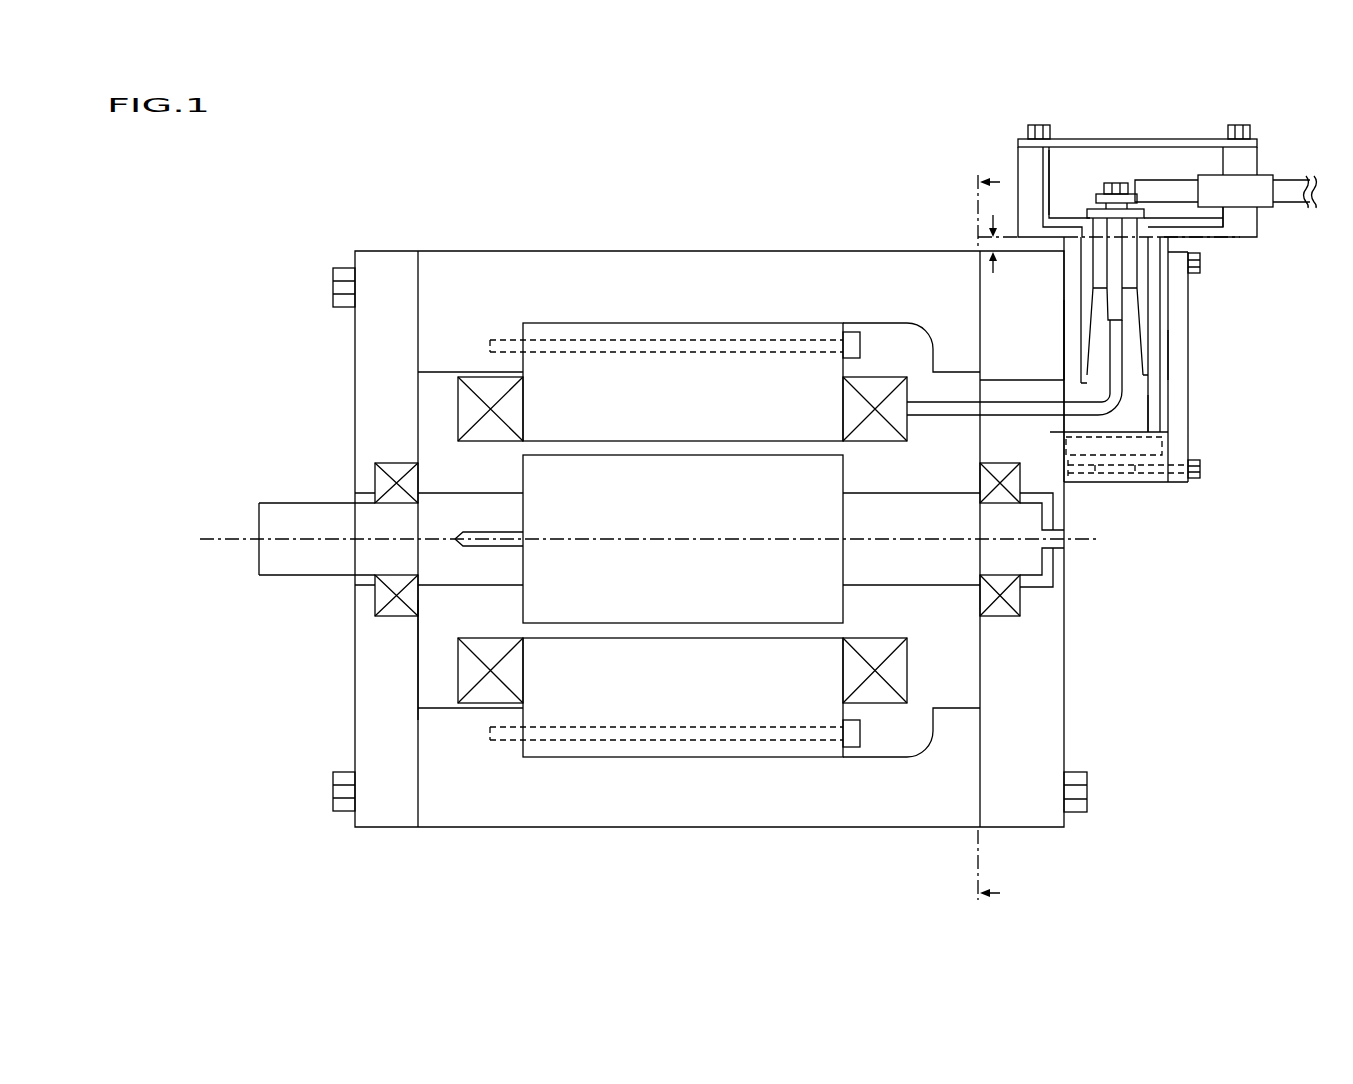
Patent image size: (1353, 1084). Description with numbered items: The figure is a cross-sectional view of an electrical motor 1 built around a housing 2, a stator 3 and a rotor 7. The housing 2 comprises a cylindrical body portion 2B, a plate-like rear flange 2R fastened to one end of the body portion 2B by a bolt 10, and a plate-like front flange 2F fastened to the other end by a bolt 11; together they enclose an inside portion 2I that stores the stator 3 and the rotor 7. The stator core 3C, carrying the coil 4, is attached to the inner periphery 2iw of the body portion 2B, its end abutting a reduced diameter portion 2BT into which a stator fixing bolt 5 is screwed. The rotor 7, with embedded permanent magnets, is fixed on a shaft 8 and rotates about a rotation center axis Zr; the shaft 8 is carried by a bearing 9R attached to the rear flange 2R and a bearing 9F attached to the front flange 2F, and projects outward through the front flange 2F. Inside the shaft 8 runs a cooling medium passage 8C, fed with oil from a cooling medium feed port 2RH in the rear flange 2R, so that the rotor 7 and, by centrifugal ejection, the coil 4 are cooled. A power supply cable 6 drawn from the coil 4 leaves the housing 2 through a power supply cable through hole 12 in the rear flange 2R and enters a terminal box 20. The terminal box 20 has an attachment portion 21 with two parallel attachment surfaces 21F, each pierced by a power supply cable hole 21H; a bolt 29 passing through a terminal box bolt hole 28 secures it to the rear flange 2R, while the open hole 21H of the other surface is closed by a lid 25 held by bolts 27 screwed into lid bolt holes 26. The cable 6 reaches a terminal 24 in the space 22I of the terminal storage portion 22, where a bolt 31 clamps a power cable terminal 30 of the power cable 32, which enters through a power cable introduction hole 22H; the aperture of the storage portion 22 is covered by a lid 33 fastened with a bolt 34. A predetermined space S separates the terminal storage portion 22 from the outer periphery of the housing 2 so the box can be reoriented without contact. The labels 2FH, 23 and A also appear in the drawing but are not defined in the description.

The electrical motor 1 is at (304, 205).
The housing 2 is at (797, 876).
The front flange 2F is at (402, 803).
The body portion 2B is at (672, 826).
The rear flange 2R is at (998, 782).
The front housing shaft hole 2FH is at (352, 580).
The cooling medium feed port 2RH is at (1066, 545).
The reduced diameter portion 2BT is at (523, 325).
The inside portion 2I is at (430, 655).
The inner periphery 2iw is at (695, 333).
The stator 3 is at (699, 513).
The stator core 3C is at (595, 330).
The coil 4 is at (470, 376).
The stator fixing bolt 5 is at (858, 332).
The power supply cable 6 is at (937, 410).
The rotor 7 is at (532, 602).
The shaft 8 is at (306, 515).
The cooling medium passage 8C is at (893, 530).
The bearing 9F is at (400, 463).
The bearing 9R is at (1000, 616).
The bolt 10 is at (1087, 790).
The bolt 11 is at (333, 288).
The power supply cable through hole 12 is at (1020, 380).
The terminal box 20 is at (1183, 513).
The attachment portion 21 is at (1160, 328).
The attachment surface 21F is at (1056, 318).
The power supply cable hole 21H is at (1156, 410).
The terminal storage portion 22 is at (1257, 225).
The space 22I is at (1058, 163).
The power cable introduction hole 22H is at (1296, 200).
The cover flange 23 is at (1217, 222).
The terminal 24 is at (1128, 270).
The lid 25 is at (1180, 440).
The lid bolt hole 26 is at (1135, 482).
The bolt 27 is at (1200, 265).
The terminal box bolt hole 28 is at (1075, 482).
The bolt 29 is at (1150, 445).
The power cable terminal 30 is at (1172, 180).
The bolt 31 is at (1116, 183).
The power cable 32 is at (1292, 205).
The lid 33 is at (1018, 142).
The bolt 34 is at (1050, 131).
The rotation center axis Zr is at (636, 540).
The predetermined space S is at (1001, 238).
The section line A is at (992, 538).